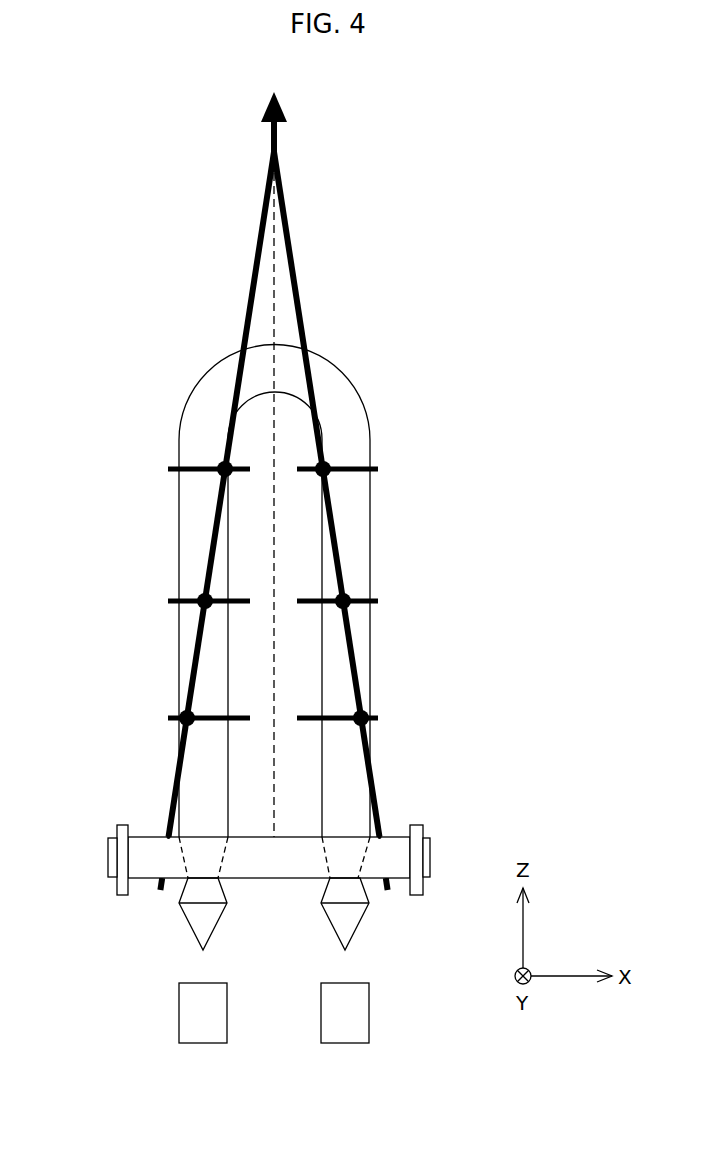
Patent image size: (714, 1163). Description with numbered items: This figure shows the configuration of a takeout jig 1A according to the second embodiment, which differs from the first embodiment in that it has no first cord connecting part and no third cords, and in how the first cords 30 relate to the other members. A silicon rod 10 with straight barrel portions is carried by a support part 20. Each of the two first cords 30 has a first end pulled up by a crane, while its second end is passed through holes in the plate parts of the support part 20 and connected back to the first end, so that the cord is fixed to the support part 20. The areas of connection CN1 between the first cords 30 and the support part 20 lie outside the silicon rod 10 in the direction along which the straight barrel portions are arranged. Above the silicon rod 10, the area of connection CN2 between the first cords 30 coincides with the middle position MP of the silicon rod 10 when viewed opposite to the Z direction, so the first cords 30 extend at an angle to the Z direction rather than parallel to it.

The takeout jig 1A is at (449, 152).
The silicon rod 10 is at (332, 352).
The support part 20 is at (396, 838).
The first cords 30 is at (259, 233).
The areas of connection CN1 is at (167, 836).
The area of connection CN2 is at (277, 152).
The middle position MP is at (275, 527).